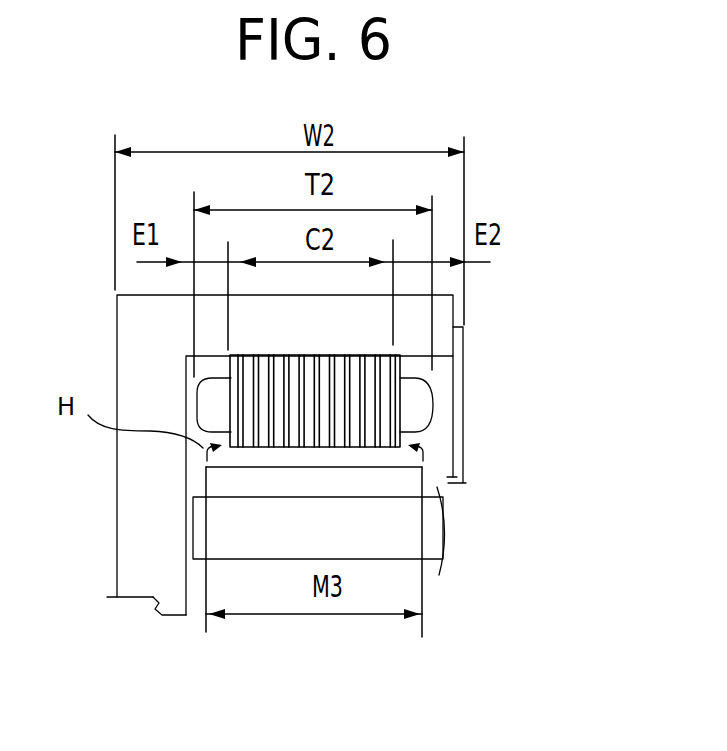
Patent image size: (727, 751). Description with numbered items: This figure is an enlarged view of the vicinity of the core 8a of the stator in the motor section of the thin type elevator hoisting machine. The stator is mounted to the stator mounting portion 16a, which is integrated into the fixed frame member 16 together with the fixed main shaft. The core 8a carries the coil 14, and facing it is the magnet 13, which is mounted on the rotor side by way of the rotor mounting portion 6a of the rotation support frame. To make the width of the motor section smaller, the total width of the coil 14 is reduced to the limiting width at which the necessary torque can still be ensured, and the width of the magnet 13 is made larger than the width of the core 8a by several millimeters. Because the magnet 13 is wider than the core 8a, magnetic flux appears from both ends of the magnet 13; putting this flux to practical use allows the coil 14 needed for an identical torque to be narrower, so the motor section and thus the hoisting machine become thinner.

The fixed frame member 16 is at (157, 590).
The stator mounting portion 16a is at (372, 321).
The coil 14 is at (413, 395).
The core 8a is at (367, 408).
The magnet 13 is at (332, 487).
The rotor mounting portion 6a is at (435, 527).